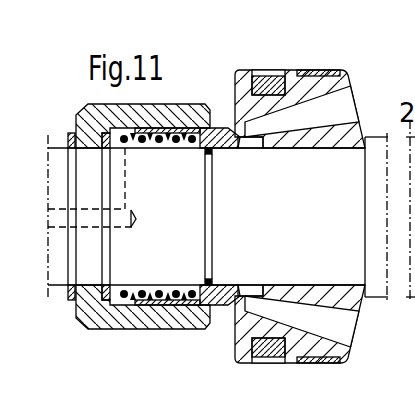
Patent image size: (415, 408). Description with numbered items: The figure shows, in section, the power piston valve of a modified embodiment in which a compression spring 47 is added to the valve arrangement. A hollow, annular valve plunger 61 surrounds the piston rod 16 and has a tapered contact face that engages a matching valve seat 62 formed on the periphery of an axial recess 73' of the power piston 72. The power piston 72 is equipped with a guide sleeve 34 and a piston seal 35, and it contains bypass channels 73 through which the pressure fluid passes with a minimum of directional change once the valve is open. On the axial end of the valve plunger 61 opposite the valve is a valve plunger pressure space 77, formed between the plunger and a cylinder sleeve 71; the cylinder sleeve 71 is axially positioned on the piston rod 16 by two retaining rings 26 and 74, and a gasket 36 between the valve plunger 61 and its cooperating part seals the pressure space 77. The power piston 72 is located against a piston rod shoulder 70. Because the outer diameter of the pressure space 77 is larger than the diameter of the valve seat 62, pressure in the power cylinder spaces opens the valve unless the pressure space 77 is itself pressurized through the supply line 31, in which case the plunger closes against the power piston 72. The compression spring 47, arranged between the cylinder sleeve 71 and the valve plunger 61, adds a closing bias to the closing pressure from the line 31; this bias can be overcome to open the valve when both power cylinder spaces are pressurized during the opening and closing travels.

The piston rod 16 is at (57, 268).
The retaining ring 26 is at (67, 307).
The supply line 31 is at (86, 220).
The guide sleeve 34 is at (330, 73).
The piston seal 35 is at (268, 70).
The gasket 36 is at (215, 153).
The compression spring 47 is at (142, 151).
The valve plunger 61 is at (223, 305).
The valve seat 62 is at (233, 132).
The piston rod shoulder 70 is at (375, 152).
The cylinder sleeve 71 is at (110, 330).
The power piston 72 is at (303, 88).
The bypass channels 73 is at (302, 216).
The axial recess 73' is at (270, 216).
The retaining ring 74 is at (108, 284).
The valve plunger pressure space 77 is at (160, 305).